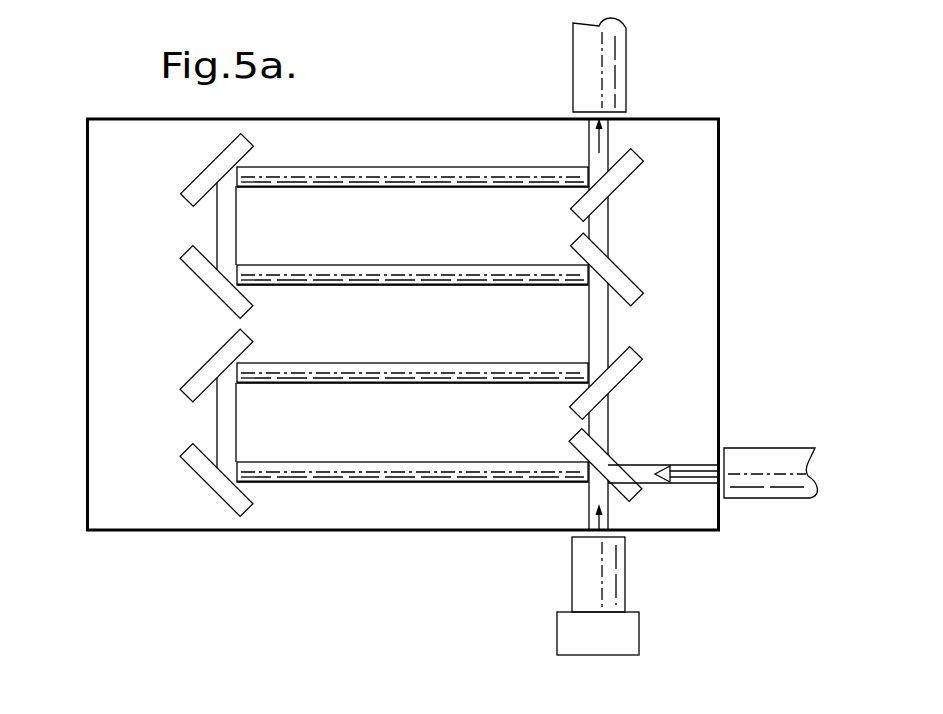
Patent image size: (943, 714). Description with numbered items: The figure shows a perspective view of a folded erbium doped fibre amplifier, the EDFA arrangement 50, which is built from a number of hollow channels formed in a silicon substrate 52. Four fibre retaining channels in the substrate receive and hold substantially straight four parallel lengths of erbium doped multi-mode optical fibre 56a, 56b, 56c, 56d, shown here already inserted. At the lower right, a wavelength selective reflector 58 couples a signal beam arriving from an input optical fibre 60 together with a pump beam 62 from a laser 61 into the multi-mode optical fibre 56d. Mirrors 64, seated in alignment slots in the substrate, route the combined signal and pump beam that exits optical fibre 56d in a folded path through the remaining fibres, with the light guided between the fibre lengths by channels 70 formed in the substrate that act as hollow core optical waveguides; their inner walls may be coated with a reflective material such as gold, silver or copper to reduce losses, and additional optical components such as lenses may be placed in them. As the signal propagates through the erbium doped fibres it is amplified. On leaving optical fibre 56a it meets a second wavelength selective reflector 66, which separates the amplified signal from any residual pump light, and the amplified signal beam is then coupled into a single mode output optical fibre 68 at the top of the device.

The EDFA arrangement 50 is at (122, 540).
The substrate 52 is at (107, 410).
The multi-mode optical fibre 56a is at (358, 169).
The multi-mode optical fibre 56b is at (381, 272).
The multi-mode optical fibre 56c is at (352, 369).
The multi-mode optical fibre 56d is at (394, 468).
The wavelength selective reflector 58 is at (603, 463).
The input optical fibre 60 is at (768, 460).
The laser 61 is at (617, 634).
The pump beam 62 is at (586, 578).
The mirrors 64 is at (207, 183).
The second wavelength selective reflector 66 is at (609, 184).
The single mode output optical fibre 68 is at (587, 78).
The channels 70 is at (227, 227).